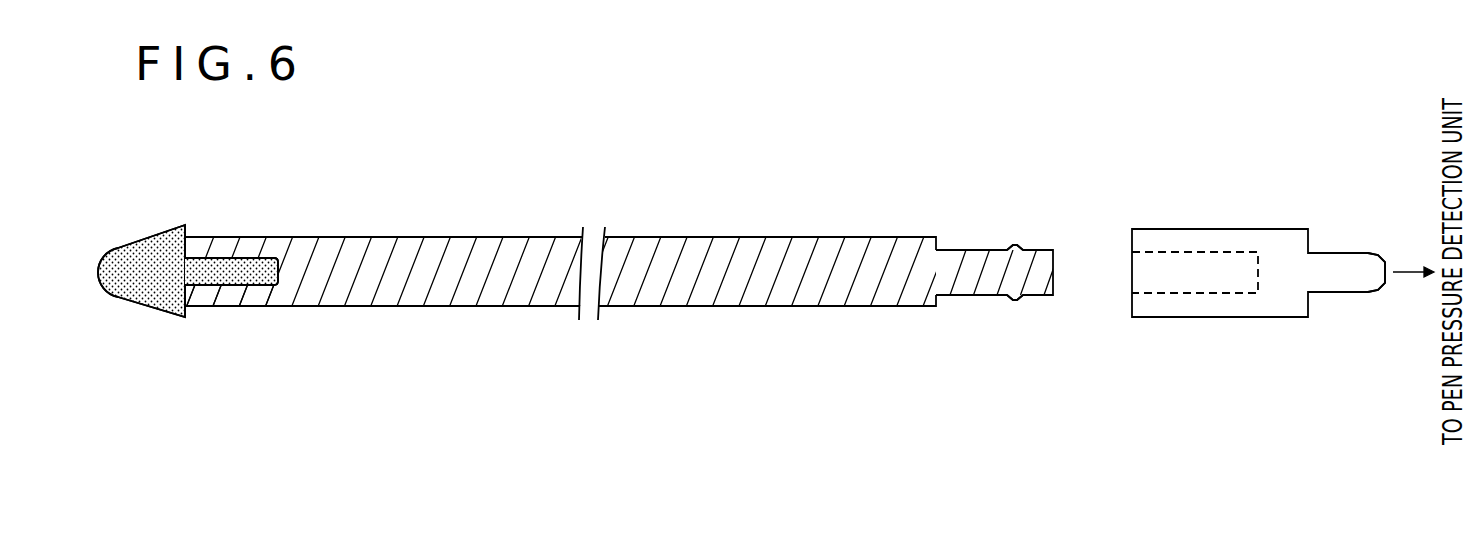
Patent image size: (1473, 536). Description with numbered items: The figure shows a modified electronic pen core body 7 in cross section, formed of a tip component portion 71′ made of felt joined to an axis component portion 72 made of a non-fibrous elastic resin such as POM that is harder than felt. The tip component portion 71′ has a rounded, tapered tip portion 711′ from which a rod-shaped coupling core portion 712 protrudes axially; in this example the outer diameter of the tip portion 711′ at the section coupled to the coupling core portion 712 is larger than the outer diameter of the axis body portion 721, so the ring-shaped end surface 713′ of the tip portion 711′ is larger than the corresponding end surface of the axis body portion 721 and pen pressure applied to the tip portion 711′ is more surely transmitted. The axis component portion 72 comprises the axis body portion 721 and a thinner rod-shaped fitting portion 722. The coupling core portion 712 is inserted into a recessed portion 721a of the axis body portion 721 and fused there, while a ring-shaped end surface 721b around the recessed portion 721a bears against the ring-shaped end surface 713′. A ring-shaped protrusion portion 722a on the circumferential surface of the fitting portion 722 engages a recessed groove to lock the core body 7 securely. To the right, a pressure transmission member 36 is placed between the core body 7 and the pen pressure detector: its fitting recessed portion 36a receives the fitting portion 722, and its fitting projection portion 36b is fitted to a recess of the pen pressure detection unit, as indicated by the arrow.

The core body 7 is at (415, 238).
The tip component portion 71′ is at (270, 162).
The tip portion 711′ is at (135, 253).
The coupling core portion 712 is at (203, 267).
The ring-shaped end surface 713′ is at (192, 296).
The axis component portion 72 is at (1005, 187).
The axis body portion 721 is at (847, 250).
The recessed portion 721a is at (244, 257).
The ring-shaped end surface 721b is at (190, 291).
The fitting portion 722 is at (953, 260).
The ring-shaped protrusion portion 722a is at (1015, 297).
The pressure transmission member 36 is at (1215, 229).
The fitting recessed portion 36a is at (1137, 282).
The fitting projection portion 36b is at (1343, 282).